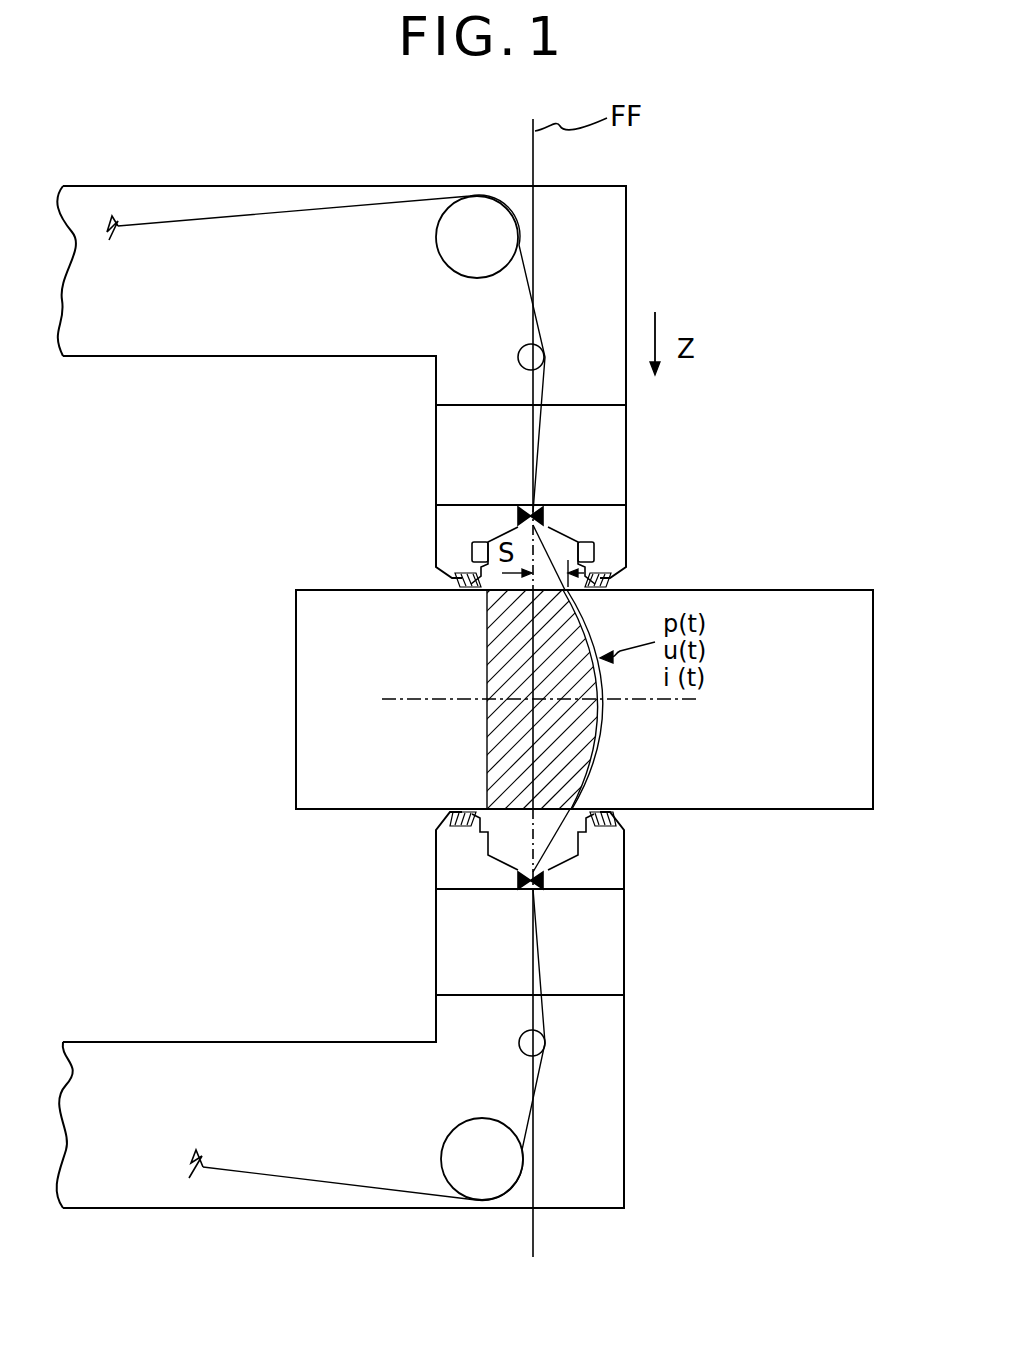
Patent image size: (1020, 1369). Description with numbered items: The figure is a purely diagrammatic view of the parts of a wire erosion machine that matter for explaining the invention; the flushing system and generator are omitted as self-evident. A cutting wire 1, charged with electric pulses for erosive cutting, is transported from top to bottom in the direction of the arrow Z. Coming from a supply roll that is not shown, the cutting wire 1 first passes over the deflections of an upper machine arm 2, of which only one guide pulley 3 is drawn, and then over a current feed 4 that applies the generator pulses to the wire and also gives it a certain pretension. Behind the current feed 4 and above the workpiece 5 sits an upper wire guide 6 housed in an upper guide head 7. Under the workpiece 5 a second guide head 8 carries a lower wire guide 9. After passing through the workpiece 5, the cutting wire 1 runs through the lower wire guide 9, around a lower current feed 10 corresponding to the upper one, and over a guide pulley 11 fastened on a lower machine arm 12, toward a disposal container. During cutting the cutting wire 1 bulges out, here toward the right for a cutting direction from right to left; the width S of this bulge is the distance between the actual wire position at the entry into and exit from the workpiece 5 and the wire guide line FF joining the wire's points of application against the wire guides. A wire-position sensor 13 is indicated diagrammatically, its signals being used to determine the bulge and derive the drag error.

The cutting wire 1 is at (203, 221).
The upper machine arm 2 is at (221, 190).
The guide pulley 3 is at (460, 225).
The current feed 4 is at (541, 357).
The workpiece 5 is at (812, 598).
The upper wire guide 6 is at (535, 512).
The upper guide head 7 is at (615, 520).
The second guide head 8 is at (617, 868).
The lower wire guide 9 is at (544, 880).
The lower current feed 10 is at (545, 1043).
The guide pulley 11 is at (453, 1142).
The lower machine arm 12 is at (607, 1158).
The wire-position sensor 13 is at (594, 552).